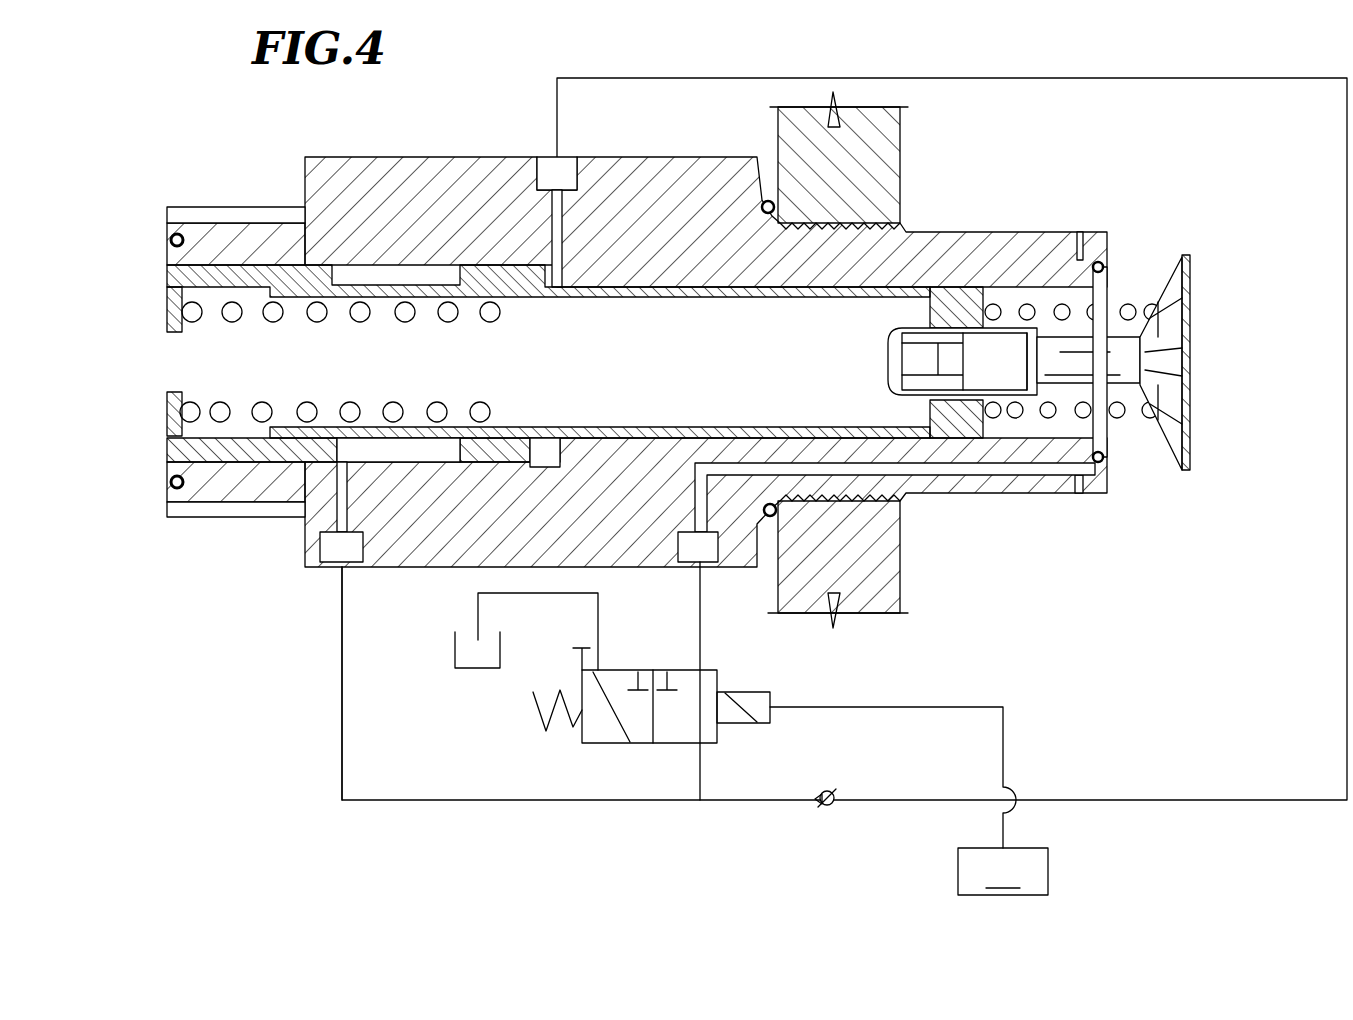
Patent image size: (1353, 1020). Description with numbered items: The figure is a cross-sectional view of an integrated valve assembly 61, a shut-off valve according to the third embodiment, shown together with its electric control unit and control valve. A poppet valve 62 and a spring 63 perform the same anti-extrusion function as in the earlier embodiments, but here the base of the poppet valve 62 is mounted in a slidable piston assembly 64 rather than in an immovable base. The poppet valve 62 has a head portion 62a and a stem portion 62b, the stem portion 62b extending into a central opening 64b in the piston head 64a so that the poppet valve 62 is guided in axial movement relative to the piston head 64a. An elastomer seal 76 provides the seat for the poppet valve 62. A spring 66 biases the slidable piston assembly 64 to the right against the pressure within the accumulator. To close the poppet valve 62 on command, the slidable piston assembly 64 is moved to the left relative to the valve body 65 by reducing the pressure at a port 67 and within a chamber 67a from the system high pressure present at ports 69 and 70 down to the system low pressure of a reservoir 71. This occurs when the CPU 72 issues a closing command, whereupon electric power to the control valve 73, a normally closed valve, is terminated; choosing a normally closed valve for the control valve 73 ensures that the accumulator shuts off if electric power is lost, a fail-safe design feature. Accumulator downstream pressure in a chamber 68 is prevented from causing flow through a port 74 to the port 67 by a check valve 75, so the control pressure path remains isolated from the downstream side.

The integrated valve assembly 61 is at (703, 143).
The poppet valve 62 is at (1190, 350).
The head portion 62a is at (1190, 392).
The stem portion 62b is at (1100, 368).
The spring 63 is at (1047, 418).
The slidable piston assembly 64 is at (857, 426).
The piston head 64a is at (968, 430).
The central opening 64b is at (968, 330).
The valve body 65 is at (915, 245).
The spring 66 is at (262, 410).
The port 67 is at (338, 560).
The chamber 67a is at (350, 452).
The chamber 68 is at (547, 300).
The port 69 is at (923, 490).
The port 70 is at (705, 558).
The reservoir 71 is at (455, 650).
The CPU 72 is at (1003, 871).
The control valve 73 is at (720, 690).
The port 74 is at (563, 157).
The check valve 75 is at (828, 805).
The elastomer seal 76 is at (1100, 263).